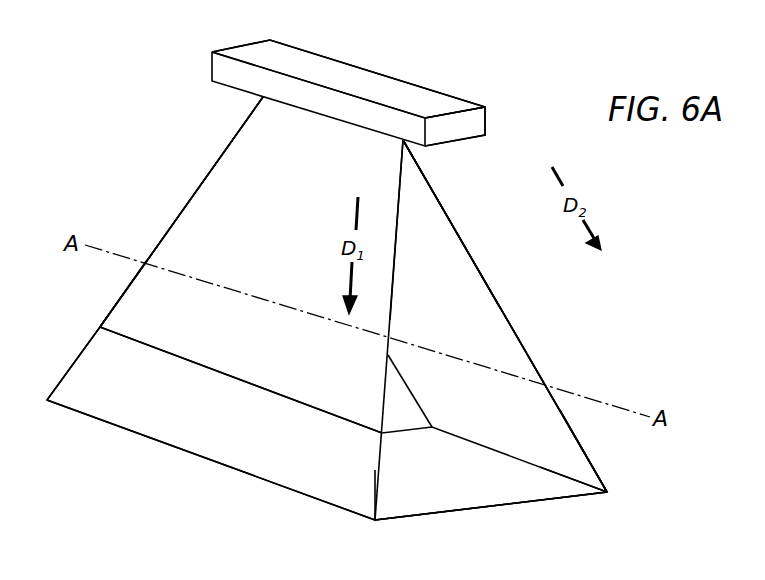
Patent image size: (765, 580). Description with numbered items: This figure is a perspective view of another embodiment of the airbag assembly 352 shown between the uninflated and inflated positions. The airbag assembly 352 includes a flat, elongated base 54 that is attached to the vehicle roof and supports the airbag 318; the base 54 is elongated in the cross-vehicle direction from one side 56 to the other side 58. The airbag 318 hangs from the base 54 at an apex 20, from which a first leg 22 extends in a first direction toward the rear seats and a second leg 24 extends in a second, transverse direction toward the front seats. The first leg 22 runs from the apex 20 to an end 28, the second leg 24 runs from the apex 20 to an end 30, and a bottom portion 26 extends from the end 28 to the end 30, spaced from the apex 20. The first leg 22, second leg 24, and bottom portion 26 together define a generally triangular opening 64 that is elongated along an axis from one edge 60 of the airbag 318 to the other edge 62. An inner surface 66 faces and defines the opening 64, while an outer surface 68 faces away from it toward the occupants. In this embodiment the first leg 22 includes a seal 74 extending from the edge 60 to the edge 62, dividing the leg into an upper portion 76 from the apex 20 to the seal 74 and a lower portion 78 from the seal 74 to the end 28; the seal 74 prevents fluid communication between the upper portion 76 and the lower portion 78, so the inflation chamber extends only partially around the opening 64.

The airbag assembly 352 is at (165, 76).
The other side of base 58 is at (243, 46).
The base 54 is at (423, 86).
The one side of base 56 is at (485, 122).
The apex 20 is at (406, 143).
The outer surface 68 is at (278, 148).
The edge 62 is at (196, 184).
The first leg 22 is at (166, 230).
The upper portion 76 is at (106, 306).
The lower portion 78 is at (76, 349).
The seal 74 is at (208, 364).
The airbag 318 is at (484, 266).
The inner surface 66 is at (484, 326).
The second leg 24 is at (532, 363).
The end of first leg 28 is at (373, 525).
The edge 60 is at (437, 517).
The opening 64 is at (444, 472).
The bottom portion 26 is at (527, 505).
The end of second leg 30 is at (613, 495).